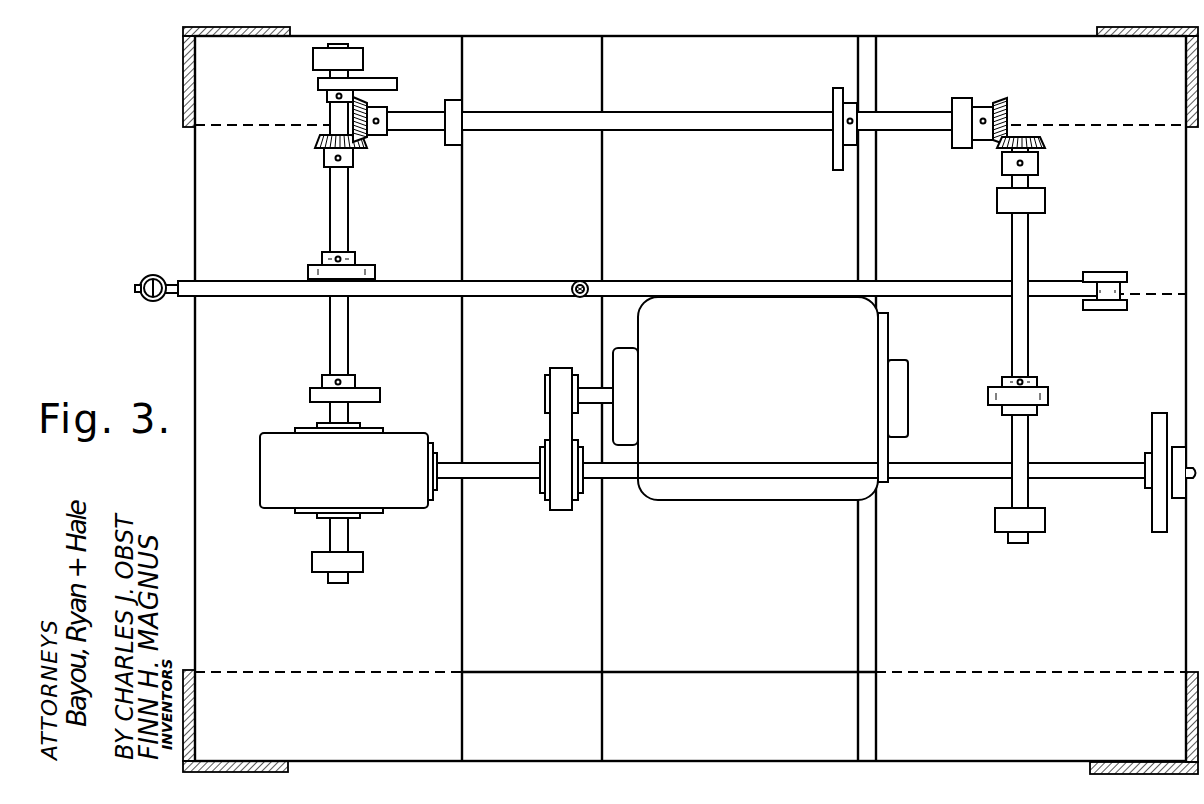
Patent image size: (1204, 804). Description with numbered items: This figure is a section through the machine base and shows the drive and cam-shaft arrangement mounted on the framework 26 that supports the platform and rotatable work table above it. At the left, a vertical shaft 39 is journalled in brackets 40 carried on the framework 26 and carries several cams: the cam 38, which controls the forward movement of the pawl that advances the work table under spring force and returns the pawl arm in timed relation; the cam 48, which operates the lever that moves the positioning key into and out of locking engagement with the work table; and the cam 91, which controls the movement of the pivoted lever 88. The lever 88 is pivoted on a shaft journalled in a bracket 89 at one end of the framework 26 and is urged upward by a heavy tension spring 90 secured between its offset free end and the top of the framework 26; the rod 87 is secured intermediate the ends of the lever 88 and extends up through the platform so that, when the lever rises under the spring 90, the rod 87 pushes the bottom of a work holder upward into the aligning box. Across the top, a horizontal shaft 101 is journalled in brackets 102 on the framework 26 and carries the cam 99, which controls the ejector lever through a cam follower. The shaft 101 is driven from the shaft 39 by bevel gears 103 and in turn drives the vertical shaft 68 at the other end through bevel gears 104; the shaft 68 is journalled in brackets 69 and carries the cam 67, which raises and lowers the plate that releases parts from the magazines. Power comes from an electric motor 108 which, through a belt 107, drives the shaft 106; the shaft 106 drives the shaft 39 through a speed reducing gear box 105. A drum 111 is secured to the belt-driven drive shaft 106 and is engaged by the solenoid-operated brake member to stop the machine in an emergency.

The framework 26 is at (183, 58).
The cam 38 is at (318, 84).
The shaft 39 is at (330, 204).
The brackets 40 is at (313, 58).
The cam 48 is at (310, 397).
The cam 67 is at (990, 395).
The shaft 68 is at (1015, 345).
The brackets 69 is at (1005, 205).
The rod 87 is at (583, 283).
The pivoted lever 88 is at (518, 288).
The bracket 89 is at (1110, 305).
The tension spring 90 is at (145, 298).
The cam 91 is at (308, 272).
The cam 99 is at (833, 98).
The shaft 101 is at (703, 118).
The brackets 102 is at (458, 145).
The bevel gears 103 is at (375, 151).
The bevel gears 104 is at (1051, 148).
The speed reducing gear box 105 is at (405, 433).
The shaft 106 is at (518, 465).
The belt 107 is at (560, 376).
The electric motor 108 is at (660, 343).
The drum 111 is at (1152, 515).